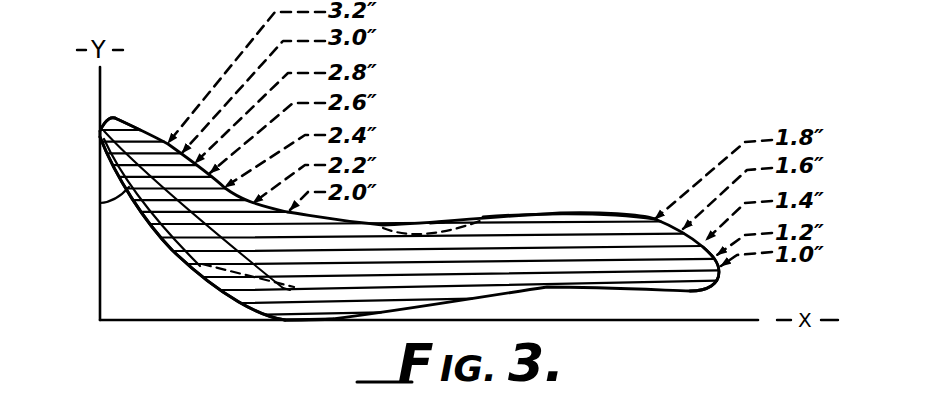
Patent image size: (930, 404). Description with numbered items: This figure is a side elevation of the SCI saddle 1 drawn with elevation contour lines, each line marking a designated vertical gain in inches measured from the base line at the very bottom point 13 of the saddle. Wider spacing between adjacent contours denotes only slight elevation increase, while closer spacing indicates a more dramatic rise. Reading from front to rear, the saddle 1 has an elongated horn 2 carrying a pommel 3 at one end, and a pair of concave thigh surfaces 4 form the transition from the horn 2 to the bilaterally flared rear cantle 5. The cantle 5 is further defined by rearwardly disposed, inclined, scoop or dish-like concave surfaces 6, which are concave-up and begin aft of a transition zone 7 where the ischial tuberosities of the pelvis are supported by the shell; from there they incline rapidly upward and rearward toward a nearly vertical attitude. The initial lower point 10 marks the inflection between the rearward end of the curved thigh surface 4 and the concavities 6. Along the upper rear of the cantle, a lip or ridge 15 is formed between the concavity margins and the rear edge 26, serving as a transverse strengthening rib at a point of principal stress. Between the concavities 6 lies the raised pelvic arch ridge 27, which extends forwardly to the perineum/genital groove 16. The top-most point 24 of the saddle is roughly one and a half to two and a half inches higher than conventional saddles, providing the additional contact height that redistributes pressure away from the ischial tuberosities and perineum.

The SCI saddle 1 is at (403, 212).
The elongated horn 2 is at (545, 213).
The pommel 3 is at (720, 277).
The concave thigh surfaces 4 is at (400, 288).
The bilaterally flared rear cantle 5 is at (172, 264).
The concave surfaces 6 is at (146, 234).
The transition zone 7 is at (300, 287).
The initial lower point 10 is at (288, 290).
The very bottom point 13 is at (302, 324).
The lip or ridge 15 is at (96, 153).
The perineum/genital groove 16 is at (437, 224).
The top-most point 24 is at (106, 114).
The rear edge 26 is at (100, 203).
The pelvic arch ridge 27 is at (337, 218).